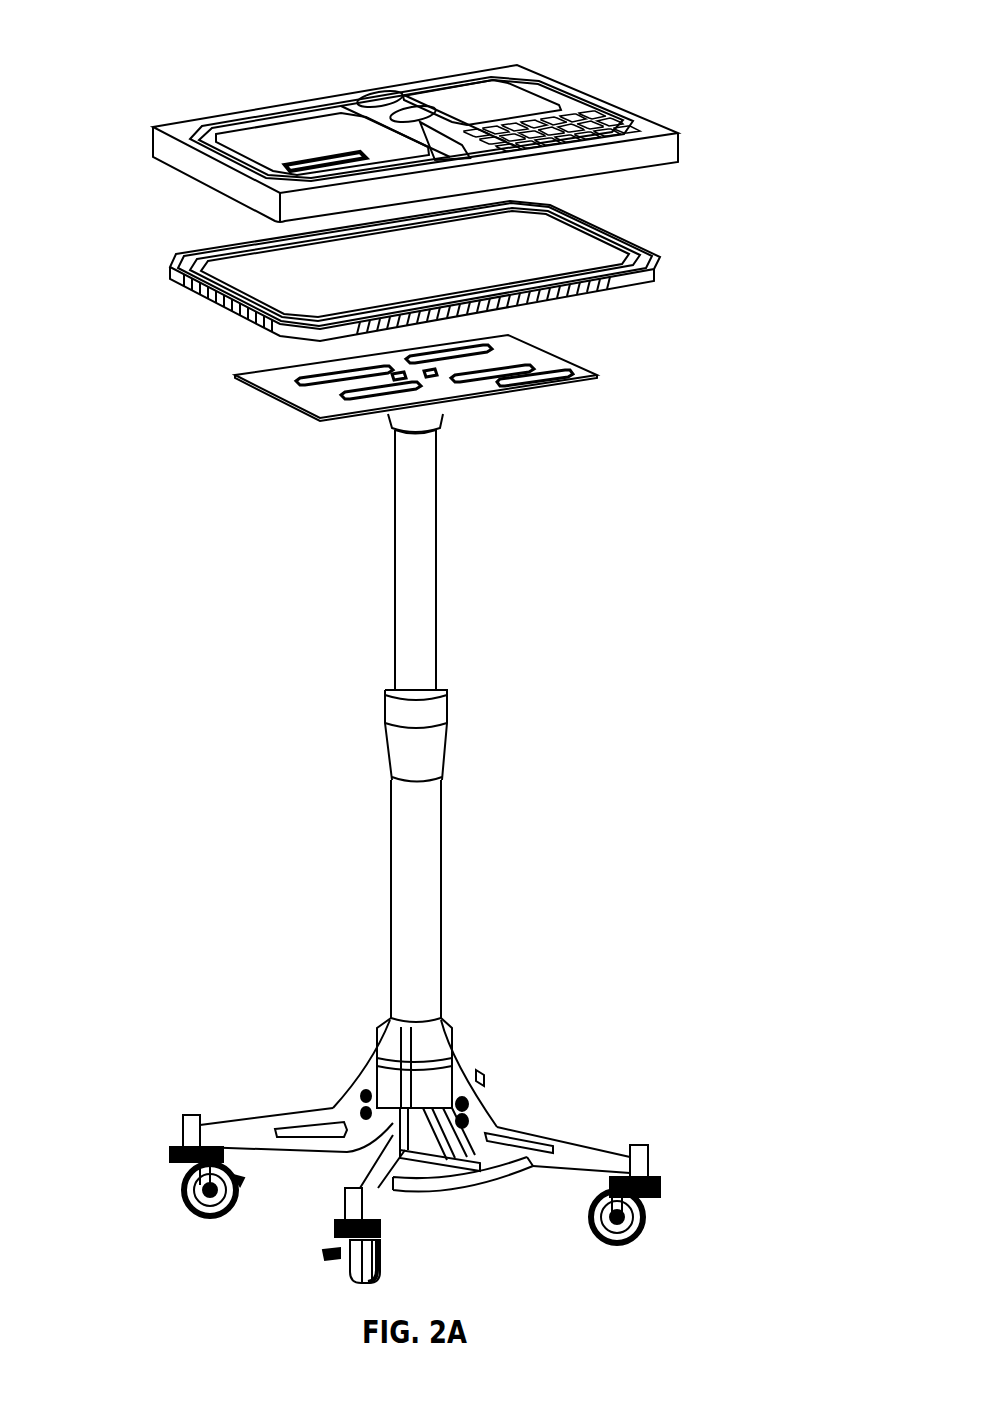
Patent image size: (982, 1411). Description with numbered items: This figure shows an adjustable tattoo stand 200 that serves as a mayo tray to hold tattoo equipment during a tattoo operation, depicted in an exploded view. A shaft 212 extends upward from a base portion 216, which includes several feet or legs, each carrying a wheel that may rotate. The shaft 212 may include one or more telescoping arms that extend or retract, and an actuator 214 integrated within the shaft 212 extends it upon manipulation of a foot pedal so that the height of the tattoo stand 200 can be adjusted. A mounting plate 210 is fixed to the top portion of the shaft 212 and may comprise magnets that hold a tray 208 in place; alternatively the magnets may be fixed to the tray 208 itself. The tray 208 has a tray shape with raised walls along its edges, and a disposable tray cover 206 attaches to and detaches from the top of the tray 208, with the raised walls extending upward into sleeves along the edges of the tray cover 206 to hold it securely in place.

The adjustable tattoo stand 200 is at (731, 66).
The disposable tray cover 206 is at (153, 148).
The tray 208 is at (153, 258).
The mounting plate 210 is at (236, 377).
The shaft 212 is at (395, 615).
The actuator 214 is at (395, 889).
The base portion 216 is at (183, 1193).